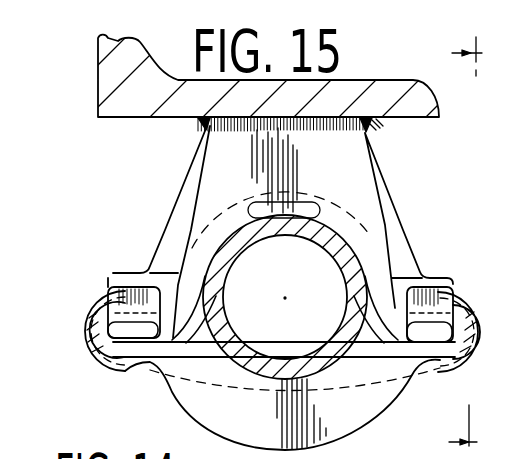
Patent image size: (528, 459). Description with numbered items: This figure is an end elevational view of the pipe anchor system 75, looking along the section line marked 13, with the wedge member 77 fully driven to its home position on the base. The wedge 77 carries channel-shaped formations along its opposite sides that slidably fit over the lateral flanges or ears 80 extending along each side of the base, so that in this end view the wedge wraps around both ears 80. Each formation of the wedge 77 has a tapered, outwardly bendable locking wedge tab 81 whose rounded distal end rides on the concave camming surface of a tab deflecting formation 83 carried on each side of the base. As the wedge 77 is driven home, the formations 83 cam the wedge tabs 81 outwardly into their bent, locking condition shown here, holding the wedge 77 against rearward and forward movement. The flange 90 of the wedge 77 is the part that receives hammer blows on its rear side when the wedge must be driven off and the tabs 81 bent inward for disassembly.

The section line indicator 13 is at (481, 247).
The pipe anchor system 75 is at (412, 211).
The wedge member 77 is at (478, 307).
The lateral flanges or ears 80 is at (147, 327).
The locking wedge tab 81 is at (458, 283).
The tab deflecting formation 83 is at (115, 288).
The flange 90 is at (348, 432).